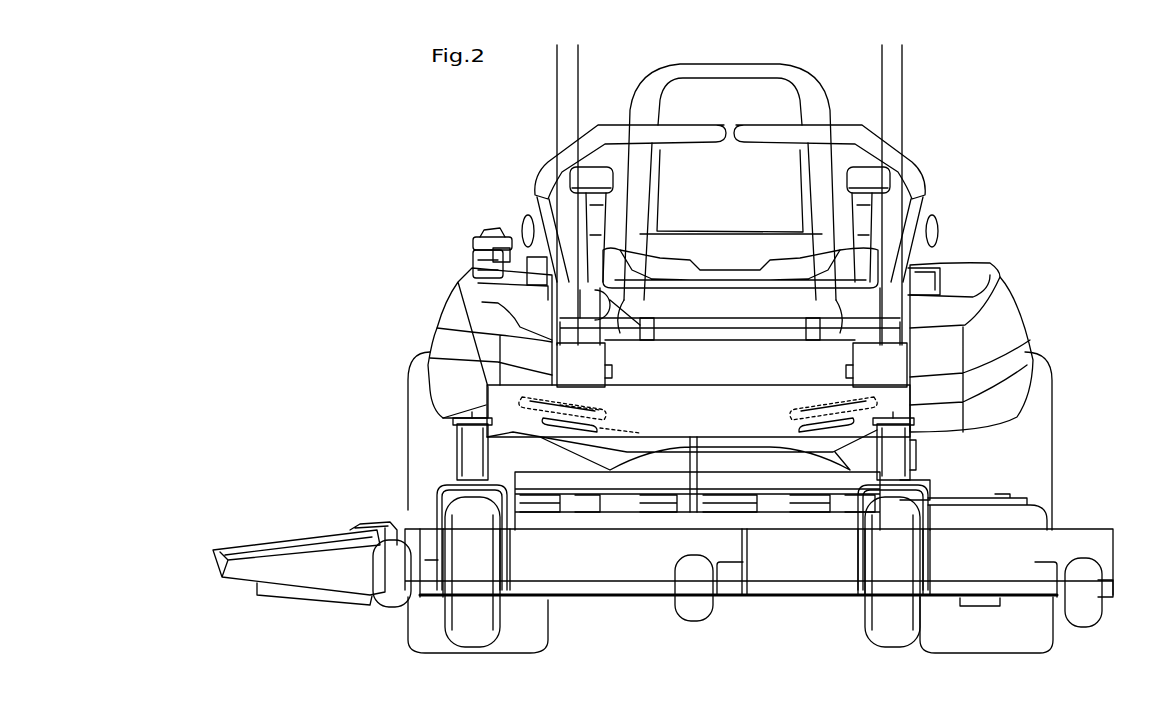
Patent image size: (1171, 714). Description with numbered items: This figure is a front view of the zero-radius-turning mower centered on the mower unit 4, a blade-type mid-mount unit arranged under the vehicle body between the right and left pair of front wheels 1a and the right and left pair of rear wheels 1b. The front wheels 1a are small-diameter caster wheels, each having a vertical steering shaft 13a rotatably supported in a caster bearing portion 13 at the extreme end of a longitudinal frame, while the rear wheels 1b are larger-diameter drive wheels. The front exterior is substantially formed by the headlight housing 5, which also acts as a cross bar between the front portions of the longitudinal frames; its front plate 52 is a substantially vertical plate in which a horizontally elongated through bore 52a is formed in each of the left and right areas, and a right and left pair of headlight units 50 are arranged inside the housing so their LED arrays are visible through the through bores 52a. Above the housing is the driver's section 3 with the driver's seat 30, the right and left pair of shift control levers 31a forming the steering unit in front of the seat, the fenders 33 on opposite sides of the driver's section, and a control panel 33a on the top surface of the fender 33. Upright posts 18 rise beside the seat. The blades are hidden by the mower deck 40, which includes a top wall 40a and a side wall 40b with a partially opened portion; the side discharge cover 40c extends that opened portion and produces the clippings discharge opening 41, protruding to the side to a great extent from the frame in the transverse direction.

The driver's section 3 is at (728, 187).
The support posts 18 is at (559, 103).
The driver's seat 30 is at (820, 102).
The shift control levers 31a is at (760, 140).
The fenders 33 is at (452, 312).
The control panel 33a is at (478, 260).
The rear wheels 1b is at (412, 410).
The headlight housing 5 is at (722, 384).
The front plate 52 is at (688, 402).
The through bore 52a is at (600, 428).
The headlight units 50 is at (563, 404).
The caster bearing portion 13 is at (466, 450).
The vertical steering shaft 13a is at (471, 416).
The front wheels 1a is at (452, 623).
The mower deck 40 is at (1084, 525).
The top wall 40a is at (820, 530).
The side wall 40b is at (622, 563).
The side discharge cover 40c is at (270, 556).
The clippings discharge opening 41 is at (249, 588).
The mower unit 4 is at (297, 536).